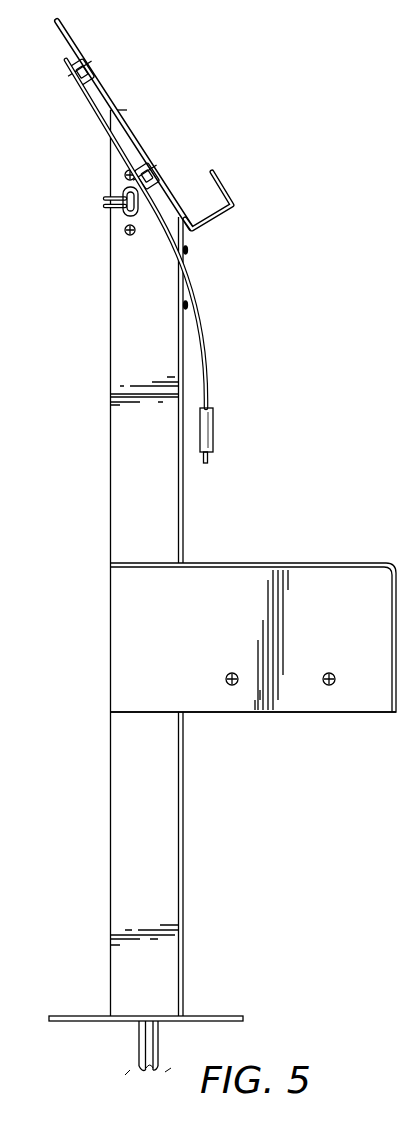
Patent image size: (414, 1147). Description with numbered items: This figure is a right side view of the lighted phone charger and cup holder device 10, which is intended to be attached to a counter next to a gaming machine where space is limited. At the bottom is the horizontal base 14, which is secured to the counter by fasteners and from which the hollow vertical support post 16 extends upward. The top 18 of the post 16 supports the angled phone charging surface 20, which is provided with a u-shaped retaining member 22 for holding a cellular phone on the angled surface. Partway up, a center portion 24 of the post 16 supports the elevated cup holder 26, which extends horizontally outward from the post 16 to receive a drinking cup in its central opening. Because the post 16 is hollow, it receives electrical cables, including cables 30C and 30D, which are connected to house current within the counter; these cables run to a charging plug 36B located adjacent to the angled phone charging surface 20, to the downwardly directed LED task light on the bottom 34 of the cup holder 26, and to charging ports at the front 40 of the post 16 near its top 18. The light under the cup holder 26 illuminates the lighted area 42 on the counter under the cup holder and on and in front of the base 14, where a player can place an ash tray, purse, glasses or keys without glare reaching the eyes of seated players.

The lighted phone charger and cup holder device 10 is at (254, 71).
The horizontal base 14 is at (212, 1016).
The hollow vertical support post 16 is at (183, 522).
The top 18 is at (117, 163).
The angled phone charging surface 20 is at (105, 88).
The u-shaped retaining member 22 is at (228, 187).
The center portion 24 is at (142, 550).
The elevated cup holder 26 is at (342, 592).
The electrical cable 30C is at (108, 198).
The electrical cable 30D is at (105, 208).
The bottom 34 is at (305, 712).
The charging plug 36B is at (212, 430).
The front 40 is at (183, 488).
The lighted area 42 is at (332, 983).